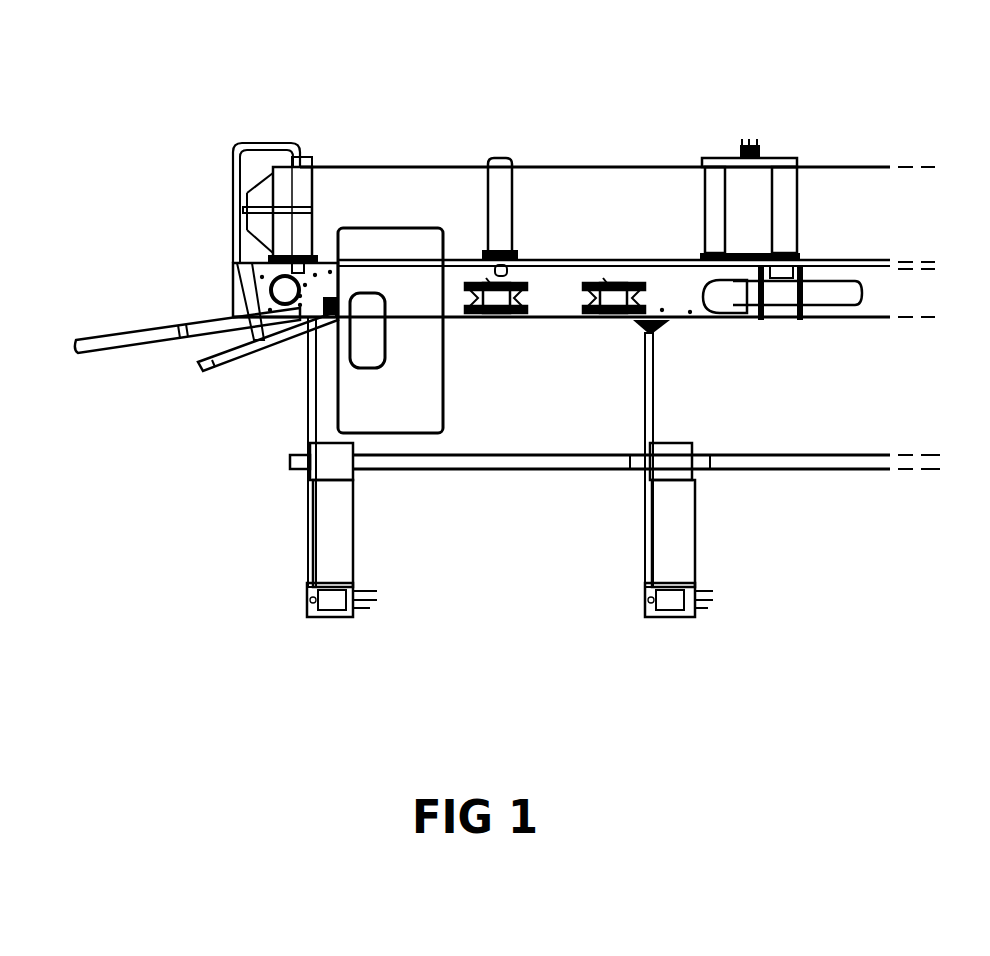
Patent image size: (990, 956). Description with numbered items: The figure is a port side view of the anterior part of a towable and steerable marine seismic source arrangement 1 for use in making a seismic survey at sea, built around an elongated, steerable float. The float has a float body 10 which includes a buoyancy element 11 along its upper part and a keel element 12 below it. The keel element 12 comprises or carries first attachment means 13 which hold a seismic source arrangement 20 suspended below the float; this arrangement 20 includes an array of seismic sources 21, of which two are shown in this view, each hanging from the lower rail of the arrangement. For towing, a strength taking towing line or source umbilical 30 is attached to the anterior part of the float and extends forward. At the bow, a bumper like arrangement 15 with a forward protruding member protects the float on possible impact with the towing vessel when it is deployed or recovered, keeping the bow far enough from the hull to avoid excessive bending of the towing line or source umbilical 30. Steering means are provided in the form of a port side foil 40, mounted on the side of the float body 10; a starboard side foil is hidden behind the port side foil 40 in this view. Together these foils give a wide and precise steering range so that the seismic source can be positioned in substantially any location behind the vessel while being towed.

The conveyor device 1 is at (228, 124).
The float body 10 is at (583, 167).
The buoyancy element 11 is at (823, 203).
The keel element 12 is at (872, 298).
The first attachment means 13 is at (310, 330).
The bumper like arrangement 15 is at (200, 372).
The seismic source arrangement 20 is at (767, 475).
The seismic source 21 is at (330, 600).
The strength taking towing line or source umbilical 30 is at (137, 326).
The port side foil 40 is at (355, 388).